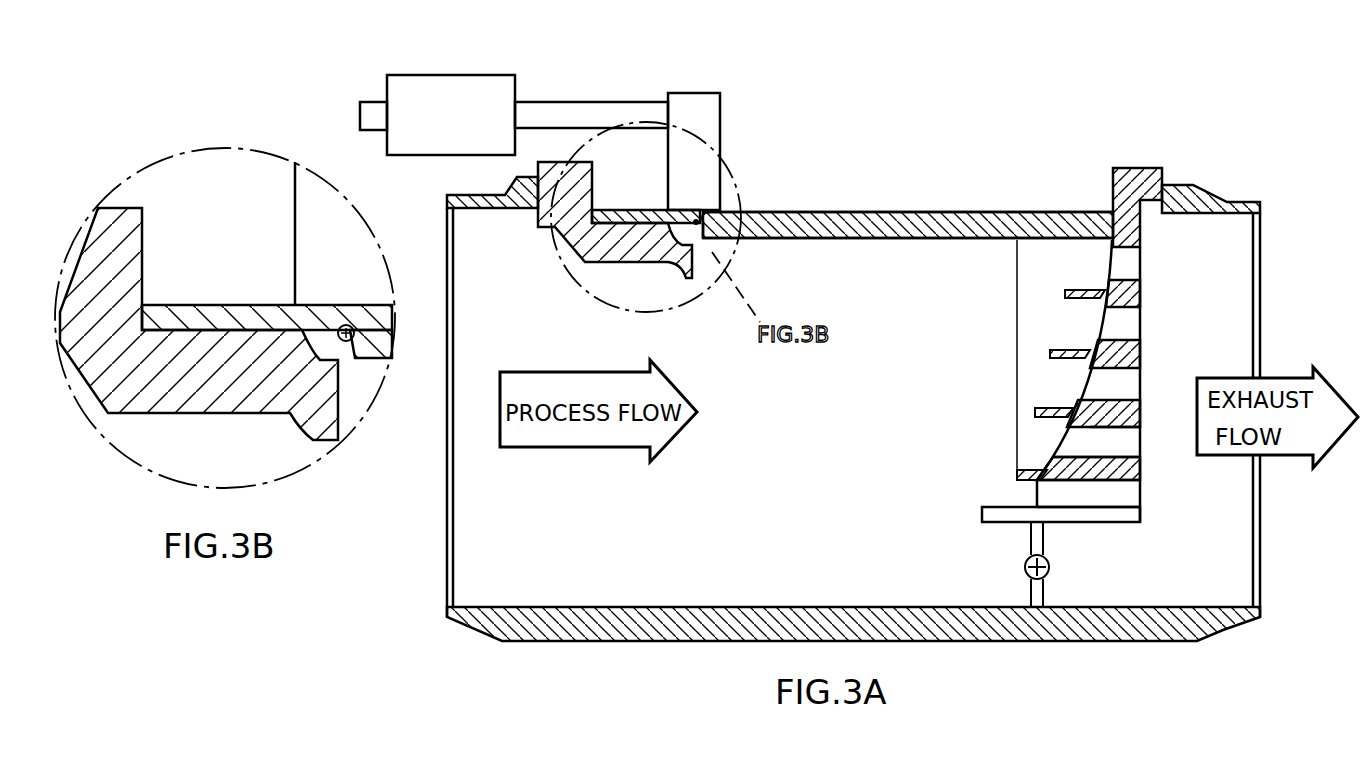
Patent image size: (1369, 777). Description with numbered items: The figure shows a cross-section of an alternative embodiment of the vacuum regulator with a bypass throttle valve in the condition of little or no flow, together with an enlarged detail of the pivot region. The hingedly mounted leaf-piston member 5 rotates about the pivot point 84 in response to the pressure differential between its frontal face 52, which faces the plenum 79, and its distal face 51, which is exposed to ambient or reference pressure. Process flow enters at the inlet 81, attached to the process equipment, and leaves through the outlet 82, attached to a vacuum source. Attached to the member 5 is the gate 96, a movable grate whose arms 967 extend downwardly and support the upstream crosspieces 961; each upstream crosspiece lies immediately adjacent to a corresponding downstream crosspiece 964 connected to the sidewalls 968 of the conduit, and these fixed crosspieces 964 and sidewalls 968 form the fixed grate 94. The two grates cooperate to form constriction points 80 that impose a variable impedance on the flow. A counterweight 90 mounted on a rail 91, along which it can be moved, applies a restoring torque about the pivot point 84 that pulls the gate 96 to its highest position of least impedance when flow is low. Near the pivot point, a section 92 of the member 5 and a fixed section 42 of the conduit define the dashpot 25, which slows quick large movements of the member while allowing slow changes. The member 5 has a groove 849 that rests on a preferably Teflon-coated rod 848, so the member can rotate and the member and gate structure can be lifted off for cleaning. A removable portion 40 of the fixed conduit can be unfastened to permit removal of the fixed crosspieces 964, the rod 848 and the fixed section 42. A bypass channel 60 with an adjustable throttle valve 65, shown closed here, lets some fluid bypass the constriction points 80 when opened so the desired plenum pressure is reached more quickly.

In FIG. 3A, the leaf-piston member 5 is at (862, 228).
In FIG. 3A, the dashpot 25 is at (661, 305).
In FIG. 3A, the removable portion 40 is at (1147, 158).
In FIG. 3A, the fixed section of the conduit 42 is at (602, 250).
In FIG. 3B, the fixed section of the conduit 42 is at (200, 393).
In FIG. 3A, the distal face 51 is at (893, 212).
In FIG. 3A, the frontal face 52 is at (893, 238).
In FIG. 3A, the bypass channel 60 is at (934, 570).
In FIG. 3A, the adjustable throttle valve 65 is at (1047, 587).
In FIG. 3A, the plenum 79 is at (787, 412).
In FIG. 3A, the constriction points 80 is at (1061, 350).
In FIG. 3A, the inlet 81 is at (462, 610).
In FIG. 3A, the outlet 82 is at (1235, 632).
In FIG. 3A, the pivot point 84 is at (710, 226).
In FIG. 3A, the counterweight 90 is at (437, 115).
In FIG. 3A, the rail 91 is at (577, 113).
In FIG. 3A, the section of the member 92 is at (622, 208).
In FIG. 3B, the section of the member 92 is at (208, 318).
In FIG. 3A, the fixed grate 94 is at (1105, 492).
In FIG. 3A, the gate 96 is at (1074, 323).
In FIG. 3B, the rod 848 is at (346, 342).
In FIG. 3B, the groove 849 is at (360, 347).
In FIG. 3A, the upstream crosspieces 961 is at (1067, 293).
In FIG. 3A, the downstream crosspieces 964 is at (1133, 298).
In FIG. 3A, the arms 967 is at (1018, 312).
In FIG. 3A, the sidewalls 968 is at (1128, 445).